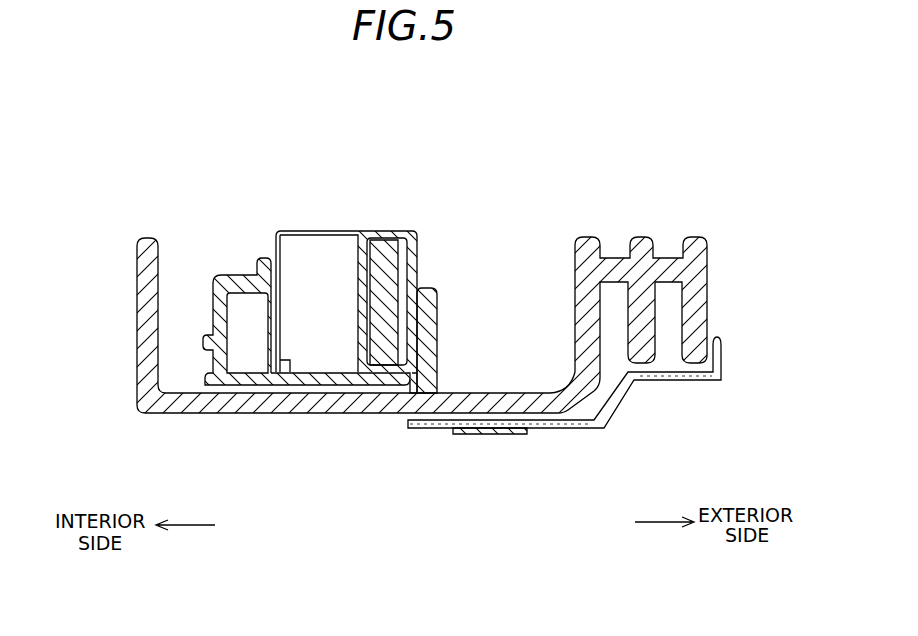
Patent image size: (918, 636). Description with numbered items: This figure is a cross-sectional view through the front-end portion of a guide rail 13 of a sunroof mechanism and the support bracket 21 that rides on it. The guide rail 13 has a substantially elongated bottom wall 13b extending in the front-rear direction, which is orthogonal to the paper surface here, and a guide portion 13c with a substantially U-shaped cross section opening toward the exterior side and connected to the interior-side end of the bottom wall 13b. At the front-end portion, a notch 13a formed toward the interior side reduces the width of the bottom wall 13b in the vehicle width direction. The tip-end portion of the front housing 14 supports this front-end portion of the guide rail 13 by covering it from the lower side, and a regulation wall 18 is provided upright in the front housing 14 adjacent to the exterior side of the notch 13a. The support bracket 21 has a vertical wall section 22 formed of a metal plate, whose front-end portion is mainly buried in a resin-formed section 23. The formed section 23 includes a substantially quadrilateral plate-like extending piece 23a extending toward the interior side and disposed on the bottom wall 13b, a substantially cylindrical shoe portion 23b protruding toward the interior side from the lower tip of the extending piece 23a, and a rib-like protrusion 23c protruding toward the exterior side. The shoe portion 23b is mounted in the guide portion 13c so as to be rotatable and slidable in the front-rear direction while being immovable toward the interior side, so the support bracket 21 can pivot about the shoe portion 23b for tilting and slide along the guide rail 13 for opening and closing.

The guide rail 13 is at (236, 263).
The notch 13a is at (423, 380).
The bottom wall 13b is at (314, 382).
The guide portion 13c is at (240, 367).
The front housing 14 is at (105, 415).
The regulation wall 18 is at (436, 325).
The support bracket 21 is at (284, 256).
The vertical wall section 22 is at (398, 270).
The formed section 23 is at (350, 230).
The extending piece 23a is at (293, 230).
The shoe portion 23b is at (250, 307).
The protrusion 23c is at (418, 245).